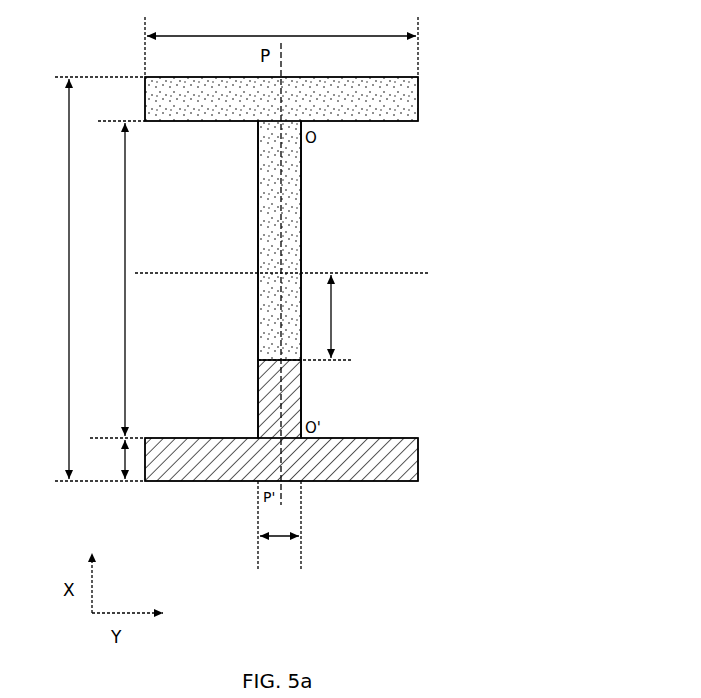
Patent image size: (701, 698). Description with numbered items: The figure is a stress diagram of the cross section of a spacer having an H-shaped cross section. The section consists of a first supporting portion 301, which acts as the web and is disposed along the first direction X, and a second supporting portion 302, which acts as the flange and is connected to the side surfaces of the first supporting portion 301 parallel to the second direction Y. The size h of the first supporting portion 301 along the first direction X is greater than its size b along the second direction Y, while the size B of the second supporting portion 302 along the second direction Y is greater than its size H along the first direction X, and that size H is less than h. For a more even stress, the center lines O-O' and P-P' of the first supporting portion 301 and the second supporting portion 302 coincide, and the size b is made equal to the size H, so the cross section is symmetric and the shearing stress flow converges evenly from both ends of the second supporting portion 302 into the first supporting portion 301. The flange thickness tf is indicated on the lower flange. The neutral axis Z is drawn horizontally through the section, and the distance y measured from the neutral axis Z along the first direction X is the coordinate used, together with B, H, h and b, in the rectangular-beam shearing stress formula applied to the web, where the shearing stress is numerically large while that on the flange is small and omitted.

The first supporting portion 301 is at (293, 195).
The second supporting portion 302 is at (392, 101).
The size of the second supporting portion along the second direction Y B is at (281, 41).
The size of the first supporting portion along the first direction X h is at (118, 278).
The size of the second supporting portion along the first direction X H is at (91, 279).
The size of the first supporting portion along the second direction Y b is at (279, 530).
The flange thickness tf is at (117, 458).
The distance from the Z axis y is at (305, 317).
The Z axis Z is at (284, 261).